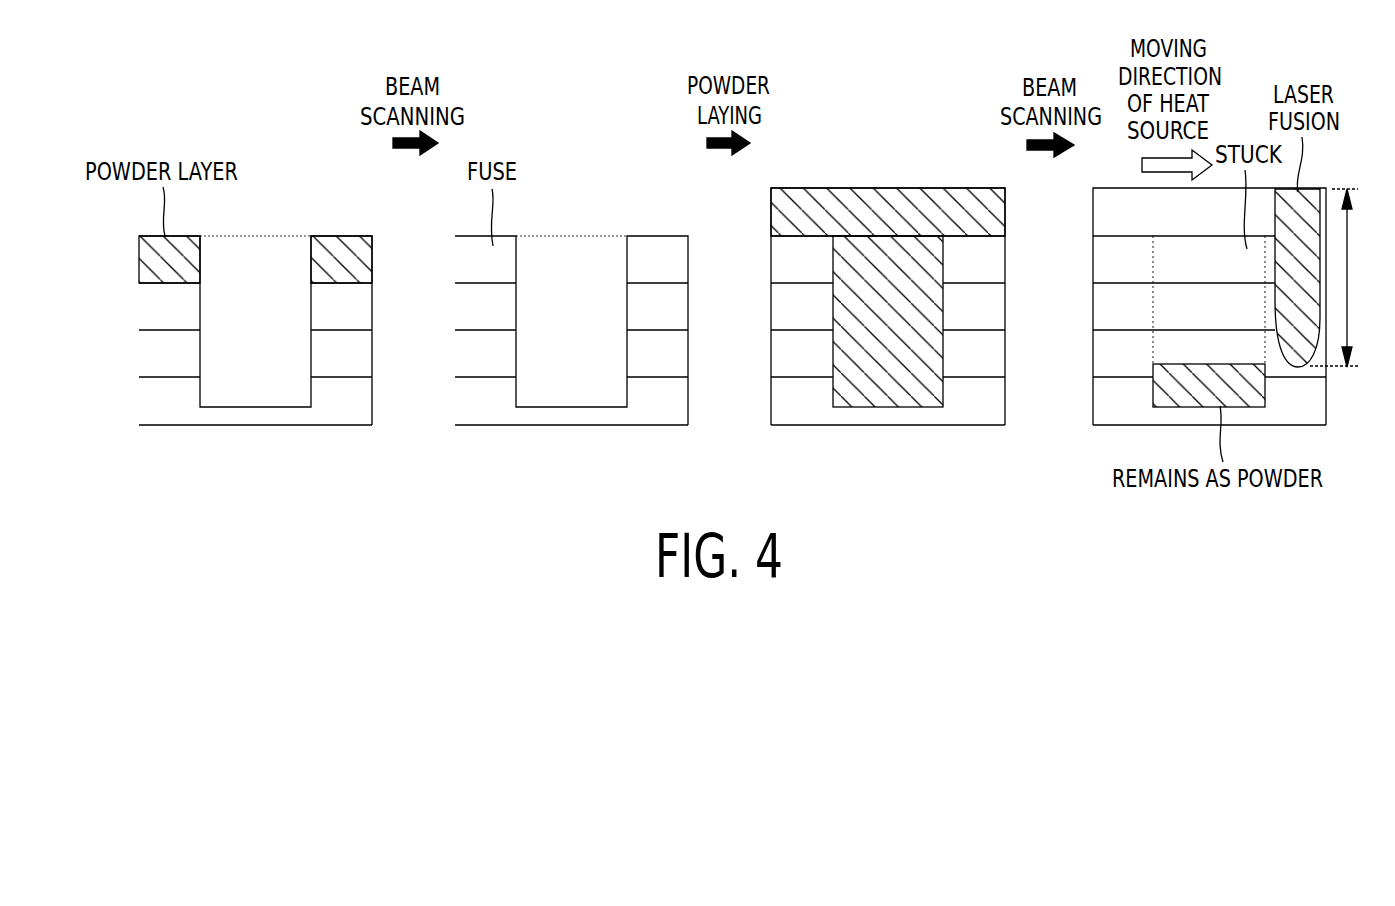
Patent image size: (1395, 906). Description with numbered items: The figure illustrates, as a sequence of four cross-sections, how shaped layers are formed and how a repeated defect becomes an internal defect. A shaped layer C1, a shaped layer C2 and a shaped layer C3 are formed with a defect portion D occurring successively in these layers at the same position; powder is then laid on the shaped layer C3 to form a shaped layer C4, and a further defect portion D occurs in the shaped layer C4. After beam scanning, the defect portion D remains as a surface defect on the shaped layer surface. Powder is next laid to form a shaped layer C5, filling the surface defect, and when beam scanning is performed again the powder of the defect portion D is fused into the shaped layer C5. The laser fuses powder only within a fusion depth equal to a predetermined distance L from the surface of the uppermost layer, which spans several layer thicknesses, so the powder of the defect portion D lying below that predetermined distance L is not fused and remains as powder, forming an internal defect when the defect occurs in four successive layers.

The shaped layer C1 is at (148, 401).
The shaped layer C2 is at (148, 354).
The shaped layer C3 is at (148, 309).
The shaped layer C4 is at (148, 265).
The shaped layer C5 is at (780, 213).
The defect portion D is at (279, 233).
The predetermined distance L is at (1338, 278).